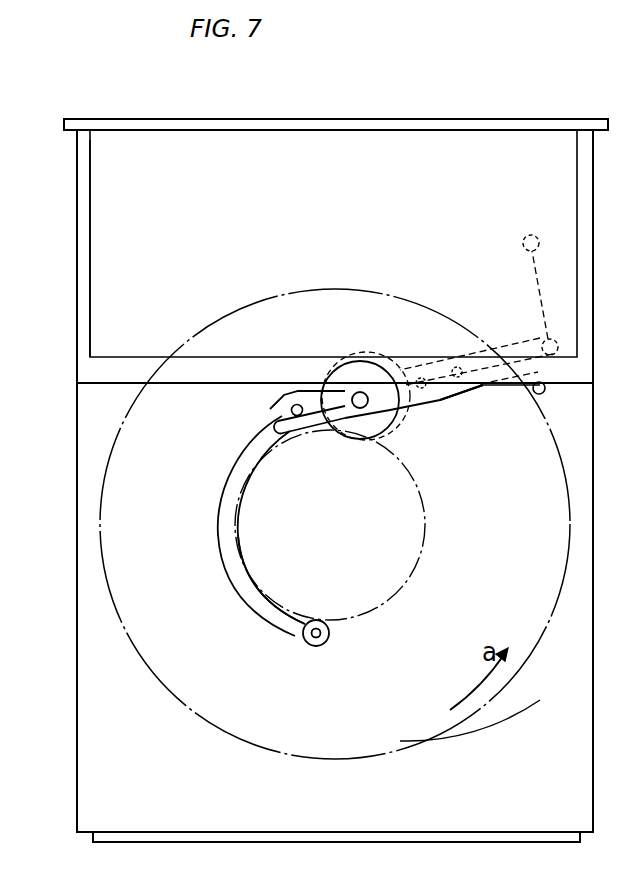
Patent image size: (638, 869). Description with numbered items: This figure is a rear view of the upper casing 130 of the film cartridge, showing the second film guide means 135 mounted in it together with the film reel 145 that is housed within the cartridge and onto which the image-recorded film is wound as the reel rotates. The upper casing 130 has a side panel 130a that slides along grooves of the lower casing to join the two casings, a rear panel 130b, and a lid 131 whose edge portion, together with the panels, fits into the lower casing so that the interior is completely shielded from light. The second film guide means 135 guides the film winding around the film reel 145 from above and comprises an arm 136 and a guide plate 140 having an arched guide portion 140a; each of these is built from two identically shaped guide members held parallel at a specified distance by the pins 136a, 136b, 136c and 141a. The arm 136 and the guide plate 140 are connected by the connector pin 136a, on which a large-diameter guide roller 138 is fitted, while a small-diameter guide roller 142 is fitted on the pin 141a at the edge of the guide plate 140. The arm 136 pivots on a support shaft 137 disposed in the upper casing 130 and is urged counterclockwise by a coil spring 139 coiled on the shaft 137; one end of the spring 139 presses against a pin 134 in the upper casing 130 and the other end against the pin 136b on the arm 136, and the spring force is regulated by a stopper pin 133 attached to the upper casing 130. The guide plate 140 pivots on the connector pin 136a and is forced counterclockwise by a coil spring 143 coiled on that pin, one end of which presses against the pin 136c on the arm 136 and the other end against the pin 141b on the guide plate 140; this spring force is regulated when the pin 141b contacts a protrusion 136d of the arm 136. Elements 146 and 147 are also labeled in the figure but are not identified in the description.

The upper casing 130 is at (382, 118).
The side panel 130a is at (80, 805).
The rear panel 130b is at (97, 338).
The lid 131 is at (300, 118).
The stopper pin 133 is at (543, 394).
The pin 134 is at (532, 235).
The second film guide means 135 is at (450, 406).
The arm 136 is at (478, 394).
The connector pin 136a is at (360, 409).
The pin 136b is at (457, 365).
The pin 136c is at (420, 390).
The protrusion 136d is at (280, 428).
The support shaft 137 is at (545, 341).
The large-diameter guide roller 138 is at (318, 438).
The coil spring 139 is at (528, 262).
The guide plate 140 is at (218, 506).
The arched guide portion 140a is at (257, 568).
The pin 141a is at (307, 642).
The pin 141b is at (292, 410).
The small-diameter guide roller 142 is at (330, 638).
The coil spring 143 is at (312, 385).
The film reel 145 is at (277, 293).
The hub of disc 146 is at (422, 518).
The periphery of disc 147 is at (460, 724).